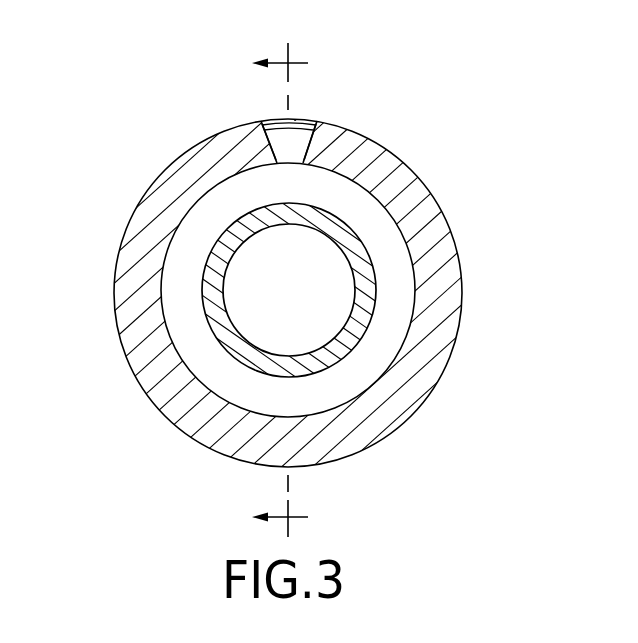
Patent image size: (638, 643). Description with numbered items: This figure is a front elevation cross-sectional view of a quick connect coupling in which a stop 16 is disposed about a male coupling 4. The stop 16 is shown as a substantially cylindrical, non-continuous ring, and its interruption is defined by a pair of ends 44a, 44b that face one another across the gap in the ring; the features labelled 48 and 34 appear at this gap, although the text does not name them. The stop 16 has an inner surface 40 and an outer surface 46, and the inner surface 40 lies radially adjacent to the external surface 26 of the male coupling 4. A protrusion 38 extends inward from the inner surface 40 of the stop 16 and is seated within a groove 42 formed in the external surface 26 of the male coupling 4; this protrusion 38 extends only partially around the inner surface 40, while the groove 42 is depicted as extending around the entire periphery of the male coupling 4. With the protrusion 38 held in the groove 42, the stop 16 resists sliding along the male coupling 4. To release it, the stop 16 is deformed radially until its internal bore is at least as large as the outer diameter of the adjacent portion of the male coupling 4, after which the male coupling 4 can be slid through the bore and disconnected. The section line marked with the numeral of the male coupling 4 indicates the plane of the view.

The stop 16 is at (138, 249).
The inner surface 40 is at (228, 416).
The outer surface 46 is at (178, 440).
The protrusion 38 is at (223, 383).
The groove 42 is at (402, 295).
The external surface 26 is at (386, 239).
The slot 48 is at (288, 136).
The membrane strip 34 is at (303, 122).
The end 44b is at (268, 141).
The end 44a is at (316, 120).
The male coupling 4 is at (247, 233).